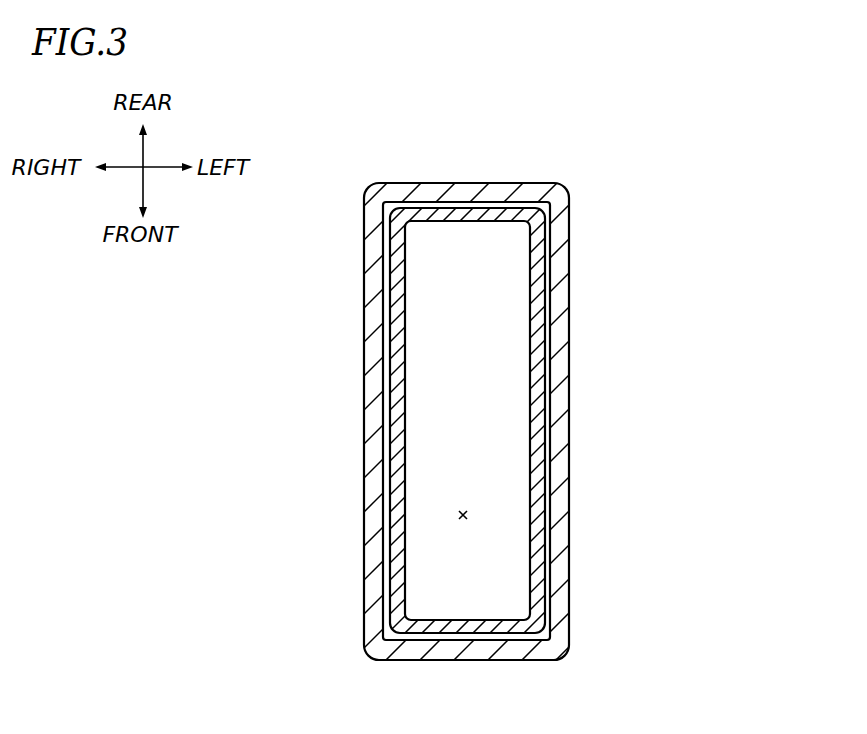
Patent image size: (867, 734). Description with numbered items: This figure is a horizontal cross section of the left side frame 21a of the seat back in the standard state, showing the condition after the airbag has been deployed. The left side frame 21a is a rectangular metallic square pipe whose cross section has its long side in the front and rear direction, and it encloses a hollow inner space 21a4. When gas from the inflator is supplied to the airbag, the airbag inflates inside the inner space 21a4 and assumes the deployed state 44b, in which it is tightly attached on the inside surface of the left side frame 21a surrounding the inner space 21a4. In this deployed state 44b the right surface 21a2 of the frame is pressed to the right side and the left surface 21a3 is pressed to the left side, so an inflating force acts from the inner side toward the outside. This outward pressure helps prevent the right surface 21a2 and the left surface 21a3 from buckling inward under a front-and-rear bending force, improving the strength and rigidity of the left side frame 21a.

The side frame 21a is at (569, 305).
The right surface 21a2 is at (364, 293).
The left surface 21a3 is at (545, 367).
The inner space 21a4 is at (468, 513).
The deployed state 44b is at (398, 461).